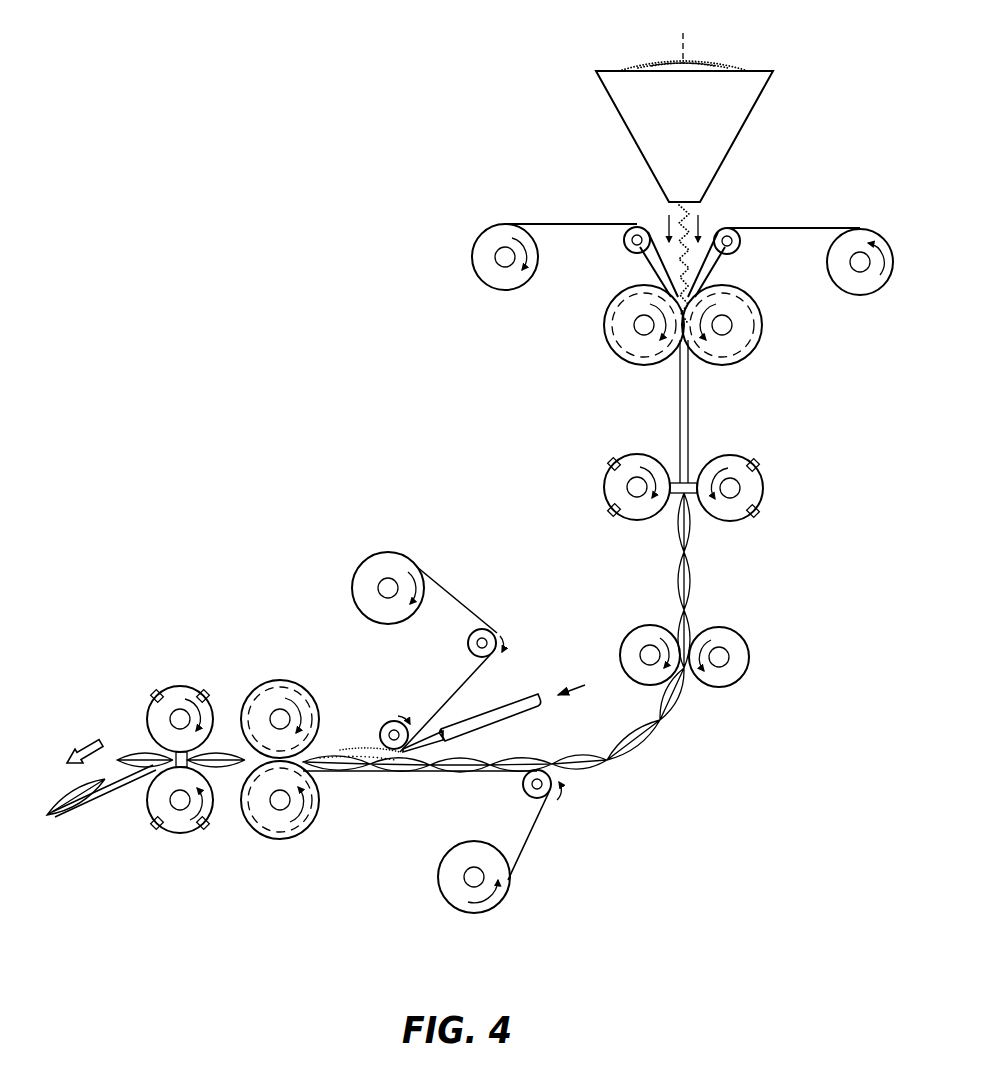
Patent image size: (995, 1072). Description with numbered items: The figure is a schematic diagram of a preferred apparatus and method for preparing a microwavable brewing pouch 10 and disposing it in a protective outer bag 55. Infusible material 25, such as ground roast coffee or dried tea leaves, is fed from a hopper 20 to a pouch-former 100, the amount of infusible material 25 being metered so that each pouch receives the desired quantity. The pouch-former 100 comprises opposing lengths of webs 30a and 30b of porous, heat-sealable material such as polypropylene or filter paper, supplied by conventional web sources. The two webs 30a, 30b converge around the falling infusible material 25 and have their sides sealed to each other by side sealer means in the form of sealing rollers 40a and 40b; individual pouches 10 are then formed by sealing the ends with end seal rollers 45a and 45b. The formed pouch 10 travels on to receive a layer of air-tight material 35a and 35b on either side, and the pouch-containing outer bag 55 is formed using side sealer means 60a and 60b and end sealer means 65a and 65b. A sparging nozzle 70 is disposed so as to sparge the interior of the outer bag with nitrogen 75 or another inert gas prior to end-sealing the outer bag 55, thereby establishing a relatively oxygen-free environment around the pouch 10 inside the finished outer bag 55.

The pouch-former 100 is at (355, 388).
The hopper 20 is at (684, 117).
The infusible material 25 is at (710, 66).
The web 30a is at (657, 260).
The web 30b is at (712, 257).
The sealing roller 40a is at (607, 335).
The sealing roller 40b is at (764, 333).
The end seal roller 45a is at (605, 497).
The end seal roller 45b is at (763, 488).
The pouch 10 is at (690, 617).
The layer of air-tight material 35a is at (461, 600).
The layer of air-tight material 35b is at (535, 838).
The sparging nozzle 70 is at (500, 708).
The nitrogen 75 is at (362, 753).
The side sealer means 60a is at (290, 681).
The side sealer means 60b is at (283, 839).
The end sealer 65a is at (190, 688).
The end sealer 65b is at (178, 834).
The outer bag 55 is at (127, 755).